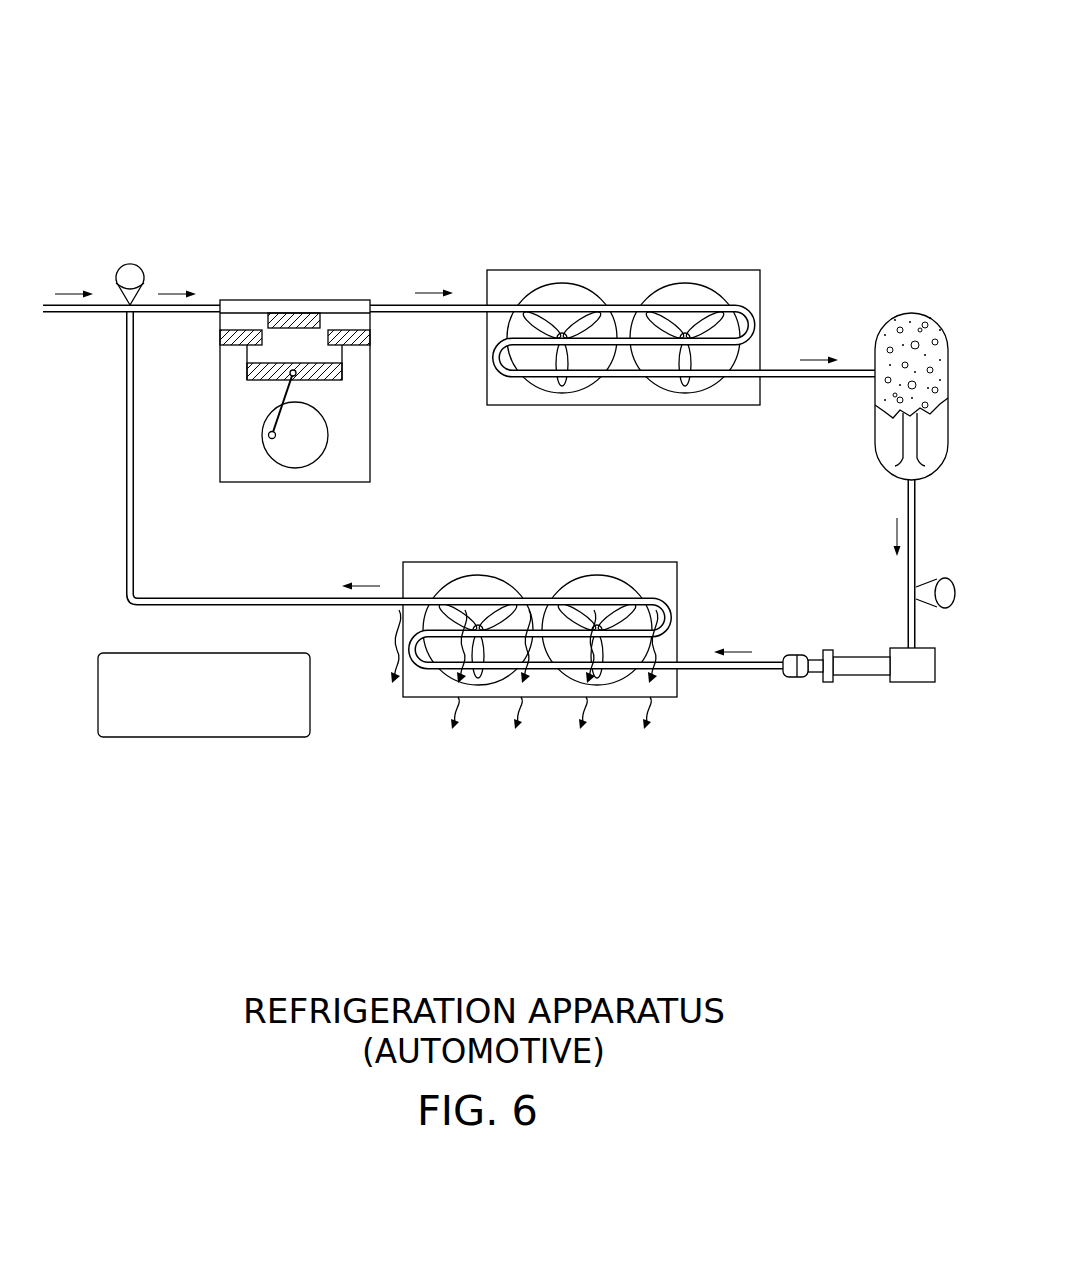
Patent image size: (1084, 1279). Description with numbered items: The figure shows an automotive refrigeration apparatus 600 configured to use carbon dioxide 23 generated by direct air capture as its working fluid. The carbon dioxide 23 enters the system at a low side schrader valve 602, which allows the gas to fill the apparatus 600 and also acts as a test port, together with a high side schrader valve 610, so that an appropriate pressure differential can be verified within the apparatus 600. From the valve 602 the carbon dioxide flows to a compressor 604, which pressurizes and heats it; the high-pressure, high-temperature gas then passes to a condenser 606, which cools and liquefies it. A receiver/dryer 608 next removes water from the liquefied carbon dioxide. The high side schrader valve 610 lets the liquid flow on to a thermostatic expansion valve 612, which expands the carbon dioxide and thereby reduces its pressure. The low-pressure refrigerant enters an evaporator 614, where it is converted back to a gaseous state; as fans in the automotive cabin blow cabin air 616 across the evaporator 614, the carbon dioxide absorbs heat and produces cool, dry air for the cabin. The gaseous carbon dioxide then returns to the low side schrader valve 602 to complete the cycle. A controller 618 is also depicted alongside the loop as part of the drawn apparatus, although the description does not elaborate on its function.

The refrigeration apparatus 600 is at (243, 67).
The low side schrader valve 602 is at (131, 263).
The compressor 604 is at (295, 300).
The condenser 606 is at (627, 270).
The receiver/dryer 608 is at (912, 315).
The high side schrader valve 610 is at (918, 590).
The thermostatic expansion valve 612 is at (852, 680).
The evaporator 614 is at (537, 562).
The cabin air 616 is at (419, 718).
The controller 618 is at (223, 718).
The carbon dioxide 23 is at (65, 313).